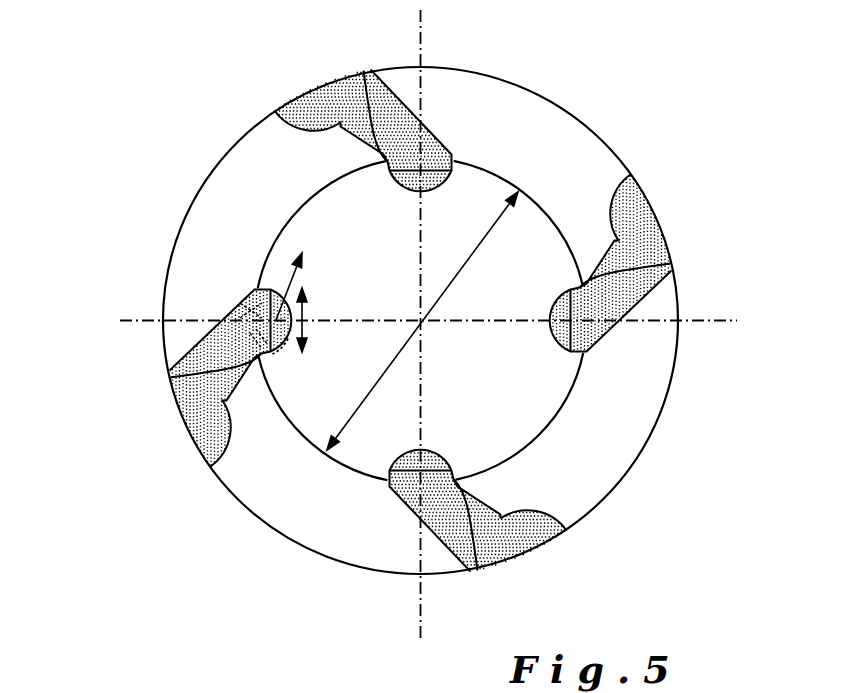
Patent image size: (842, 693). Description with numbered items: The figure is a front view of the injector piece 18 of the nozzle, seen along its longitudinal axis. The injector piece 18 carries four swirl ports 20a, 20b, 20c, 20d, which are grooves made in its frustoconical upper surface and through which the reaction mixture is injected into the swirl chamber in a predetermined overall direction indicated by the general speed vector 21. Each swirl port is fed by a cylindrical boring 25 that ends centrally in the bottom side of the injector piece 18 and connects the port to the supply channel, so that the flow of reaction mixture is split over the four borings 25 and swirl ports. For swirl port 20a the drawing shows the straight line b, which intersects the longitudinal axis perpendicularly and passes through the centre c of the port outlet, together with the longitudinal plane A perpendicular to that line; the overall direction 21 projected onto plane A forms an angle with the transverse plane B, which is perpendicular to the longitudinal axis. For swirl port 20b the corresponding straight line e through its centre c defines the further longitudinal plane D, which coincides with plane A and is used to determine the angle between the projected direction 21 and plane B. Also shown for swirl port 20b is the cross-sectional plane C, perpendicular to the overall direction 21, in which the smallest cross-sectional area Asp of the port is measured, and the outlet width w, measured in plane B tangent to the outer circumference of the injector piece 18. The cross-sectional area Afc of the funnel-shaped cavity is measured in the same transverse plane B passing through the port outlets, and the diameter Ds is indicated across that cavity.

The injector piece 18 is at (292, 552).
The swirl port 20a is at (447, 517).
The swirl port 20b is at (250, 300).
The swirl port 20c is at (410, 135).
The swirl port 20d is at (628, 308).
The general speed vector 21 is at (292, 280).
The cylindrical boring 25 is at (537, 532).
The longitudinal plane A is at (702, 325).
The transverse plane B is at (403, 221).
The cross-sectional plane C is at (272, 318).
The further longitudinal plane D is at (122, 323).
The cross-sectional area of the funnel-shaped cavity Afc is at (518, 207).
The smallest cross-sectional area of the swirl port Asp is at (262, 326).
The diameter Ds is at (468, 268).
The straight line b is at (423, 389).
The centre of the swirl port outlet c is at (277, 321).
The straight line e is at (381, 314).
The width of the swirl port w is at (310, 320).